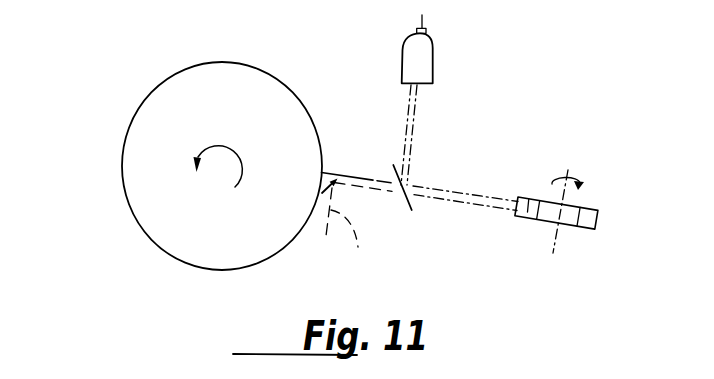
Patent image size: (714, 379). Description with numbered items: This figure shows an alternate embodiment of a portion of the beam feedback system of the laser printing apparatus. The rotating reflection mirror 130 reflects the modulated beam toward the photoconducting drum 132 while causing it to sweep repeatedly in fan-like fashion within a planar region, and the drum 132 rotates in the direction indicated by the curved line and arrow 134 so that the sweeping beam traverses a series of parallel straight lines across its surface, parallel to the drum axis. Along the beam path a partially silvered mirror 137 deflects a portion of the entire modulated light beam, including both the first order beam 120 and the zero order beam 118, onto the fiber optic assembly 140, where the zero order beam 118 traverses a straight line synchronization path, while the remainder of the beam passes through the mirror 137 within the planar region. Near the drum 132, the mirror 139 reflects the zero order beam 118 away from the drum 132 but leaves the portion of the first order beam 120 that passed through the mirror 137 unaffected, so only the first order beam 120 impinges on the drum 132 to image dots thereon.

The photoconducting drum 132 is at (123, 138).
The curved line and arrow 134 is at (237, 143).
The first order beam 120 is at (354, 172).
The partially silvered mirror 137 is at (407, 215).
The fiber optic assembly 140 is at (446, 59).
The rotating reflection mirror 130 is at (590, 229).
The mirror 139 is at (322, 193).
The zero order beam 118 is at (350, 237).